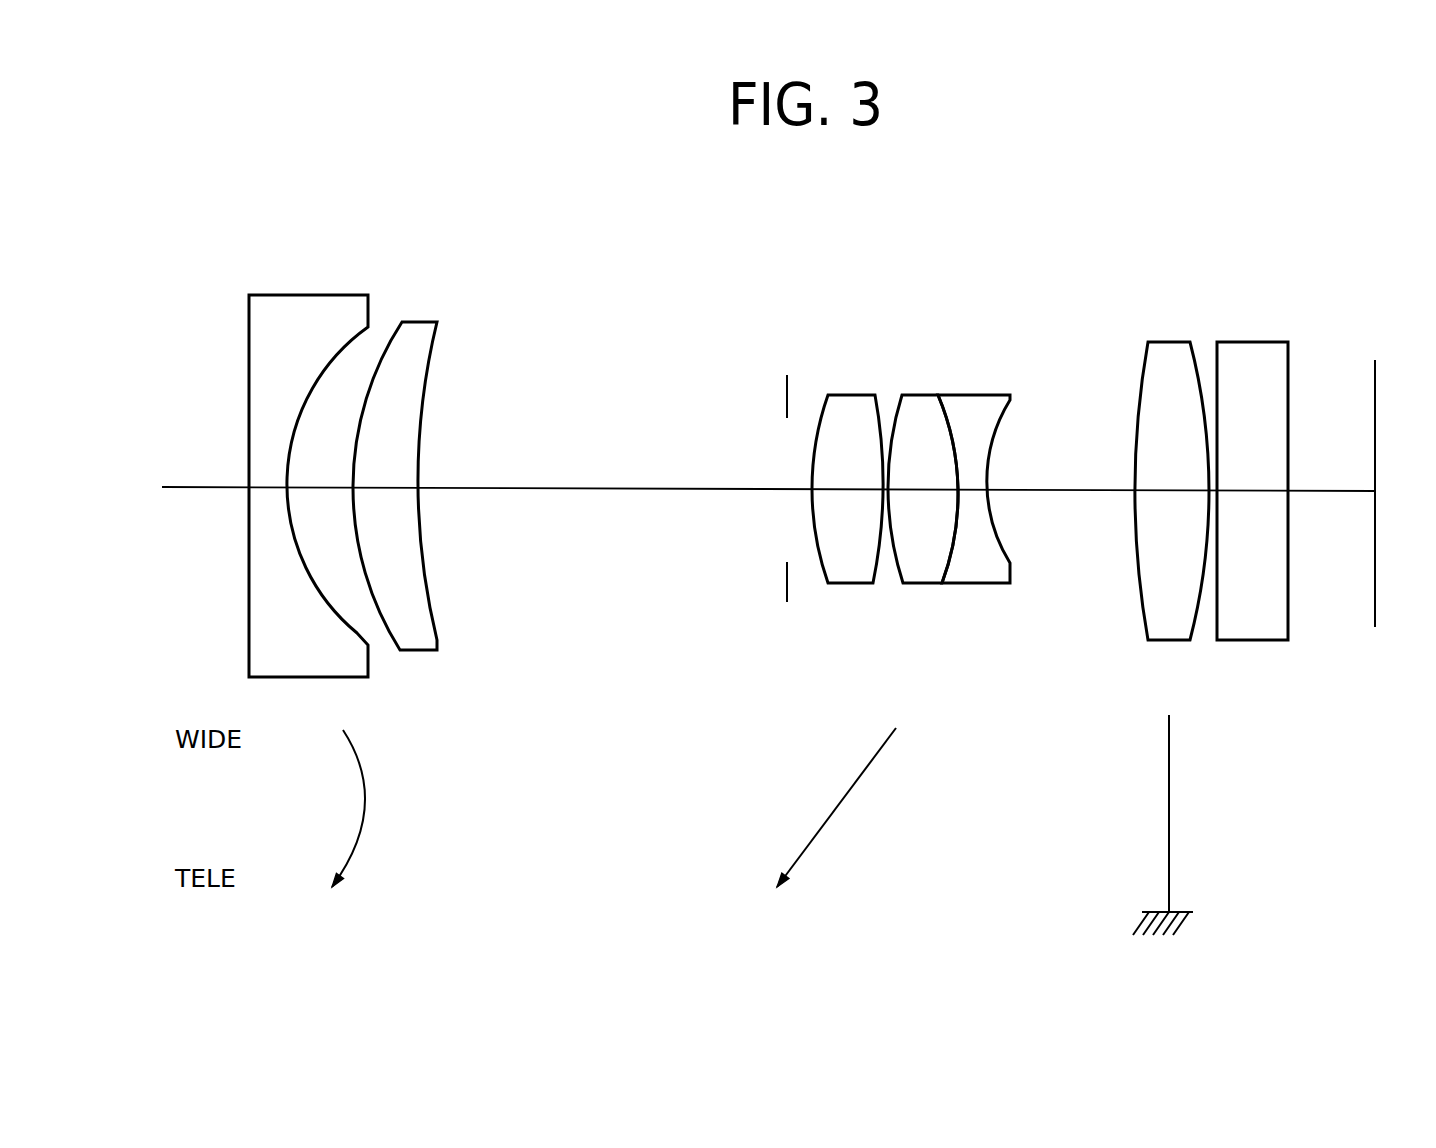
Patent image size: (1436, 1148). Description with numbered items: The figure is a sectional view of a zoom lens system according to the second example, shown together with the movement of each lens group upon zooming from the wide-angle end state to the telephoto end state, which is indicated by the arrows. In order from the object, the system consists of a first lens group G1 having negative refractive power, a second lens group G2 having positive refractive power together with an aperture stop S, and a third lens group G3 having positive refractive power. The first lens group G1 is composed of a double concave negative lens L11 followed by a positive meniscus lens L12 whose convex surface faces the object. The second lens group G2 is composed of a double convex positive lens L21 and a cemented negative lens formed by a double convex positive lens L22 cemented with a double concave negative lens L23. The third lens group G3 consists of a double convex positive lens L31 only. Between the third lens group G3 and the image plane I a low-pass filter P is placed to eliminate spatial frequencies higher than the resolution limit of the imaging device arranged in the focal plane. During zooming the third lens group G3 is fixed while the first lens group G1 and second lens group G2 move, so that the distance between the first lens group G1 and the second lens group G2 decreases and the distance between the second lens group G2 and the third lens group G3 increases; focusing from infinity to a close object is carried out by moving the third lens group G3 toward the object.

The first lens group G1 is at (440, 222).
The double concave negative lens L11 is at (289, 295).
The positive meniscus lens L12 is at (417, 322).
The aperture stop S is at (787, 394).
The second lens group G2 is at (1022, 293).
The double convex positive lens L21 is at (841, 395).
The double convex positive lens L22 is at (909, 395).
The double concave negative lens L23 is at (980, 395).
The third lens group G3 is at (1206, 260).
The double convex positive lens L31 is at (1170, 342).
The low-pass filter P is at (1253, 342).
The image plane I is at (1375, 387).